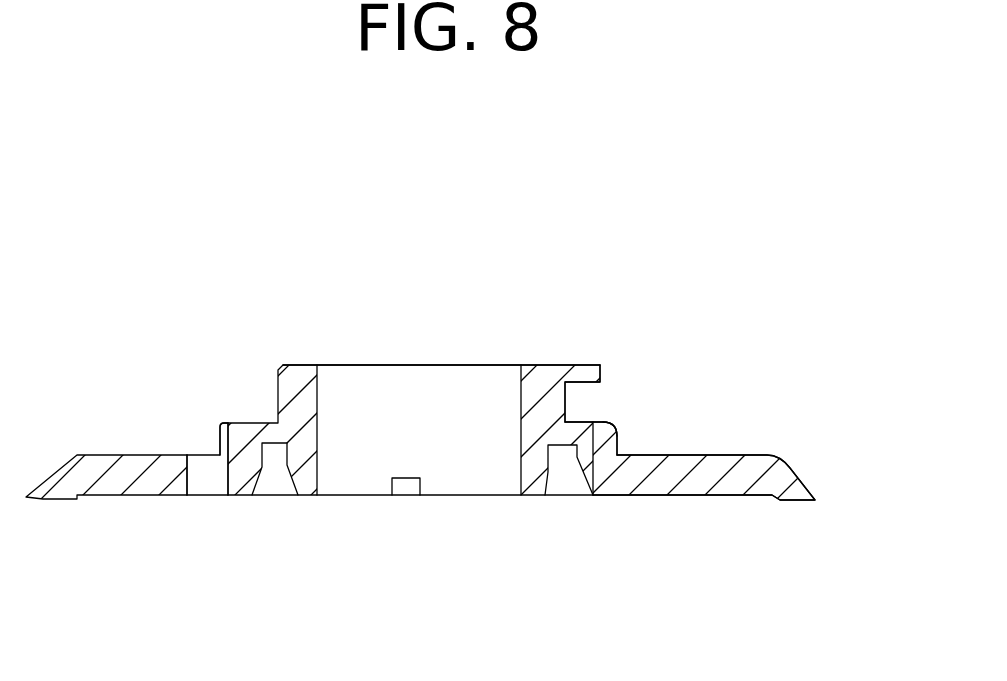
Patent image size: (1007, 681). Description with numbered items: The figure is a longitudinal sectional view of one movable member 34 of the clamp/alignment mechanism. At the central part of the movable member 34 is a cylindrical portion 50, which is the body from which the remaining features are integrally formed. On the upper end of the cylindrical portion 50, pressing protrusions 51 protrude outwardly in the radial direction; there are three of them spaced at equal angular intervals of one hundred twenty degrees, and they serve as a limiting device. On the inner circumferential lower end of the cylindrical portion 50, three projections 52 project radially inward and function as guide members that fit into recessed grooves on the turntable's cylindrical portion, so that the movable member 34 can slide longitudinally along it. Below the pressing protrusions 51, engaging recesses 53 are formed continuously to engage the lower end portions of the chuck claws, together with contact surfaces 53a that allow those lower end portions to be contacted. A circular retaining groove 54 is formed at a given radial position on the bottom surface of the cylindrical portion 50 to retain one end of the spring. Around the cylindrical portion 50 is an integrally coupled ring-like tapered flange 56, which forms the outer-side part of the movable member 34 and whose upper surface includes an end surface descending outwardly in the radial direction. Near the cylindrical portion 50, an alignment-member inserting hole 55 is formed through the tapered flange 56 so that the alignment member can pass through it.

The movable member 34 is at (320, 324).
The cylindrical portion 50 is at (533, 368).
The pressing protrusion 51 is at (600, 365).
The projection 52 is at (407, 487).
The engaging recess 53 is at (565, 402).
The contact surface 53a is at (605, 423).
The retaining groove 54 is at (560, 478).
The alignment-member inserting hole 55 is at (200, 495).
The tapered flange 56 is at (793, 478).